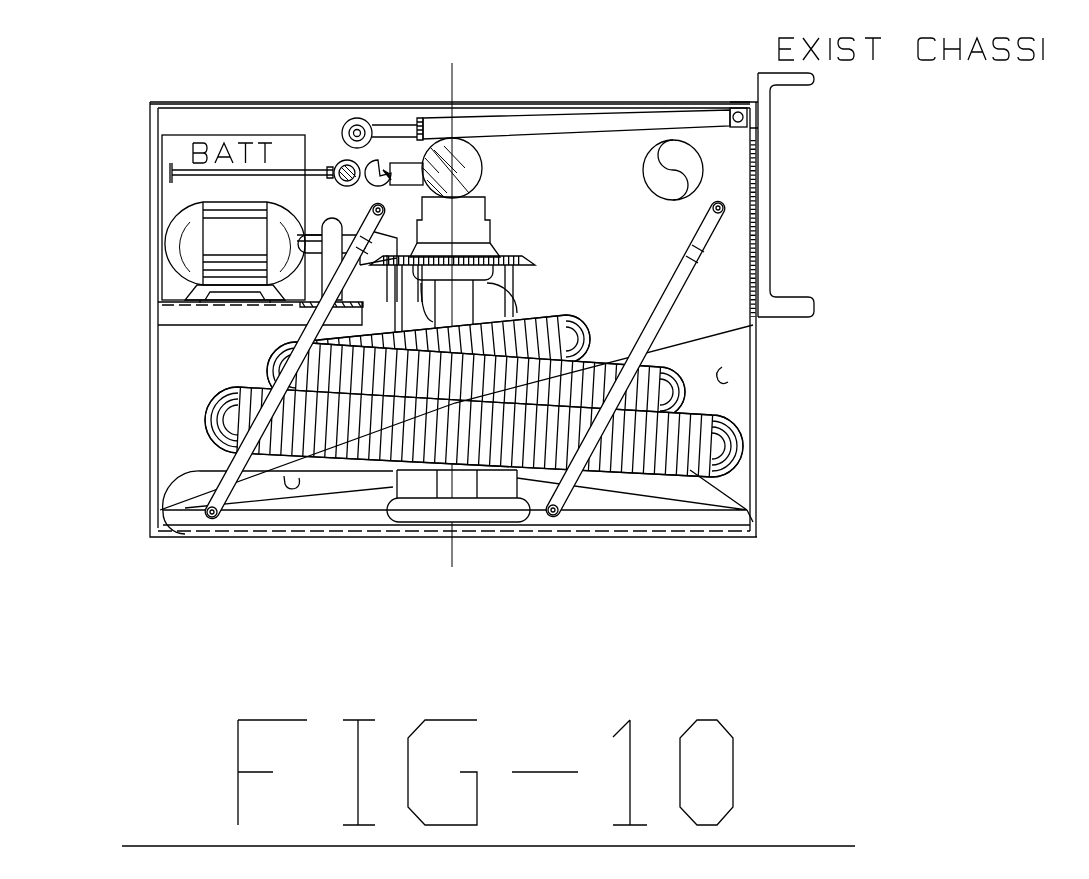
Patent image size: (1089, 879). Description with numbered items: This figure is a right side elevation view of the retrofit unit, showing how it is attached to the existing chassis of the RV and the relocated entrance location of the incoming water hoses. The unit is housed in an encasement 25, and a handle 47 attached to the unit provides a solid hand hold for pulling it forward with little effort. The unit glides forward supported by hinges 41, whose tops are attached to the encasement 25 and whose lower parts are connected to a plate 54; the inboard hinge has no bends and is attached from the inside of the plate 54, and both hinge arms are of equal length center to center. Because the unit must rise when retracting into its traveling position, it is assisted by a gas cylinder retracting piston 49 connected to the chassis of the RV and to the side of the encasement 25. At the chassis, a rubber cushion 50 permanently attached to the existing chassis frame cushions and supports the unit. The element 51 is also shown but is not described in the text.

The encasement 25 is at (152, 338).
The hinge 41 is at (300, 333).
The handle 47 is at (150, 123).
The gas cylinder retracting piston 49 is at (535, 112).
The rubber cushion 50 is at (758, 222).
The indicator lamp 51 is at (648, 190).
The plate 54 is at (290, 490).